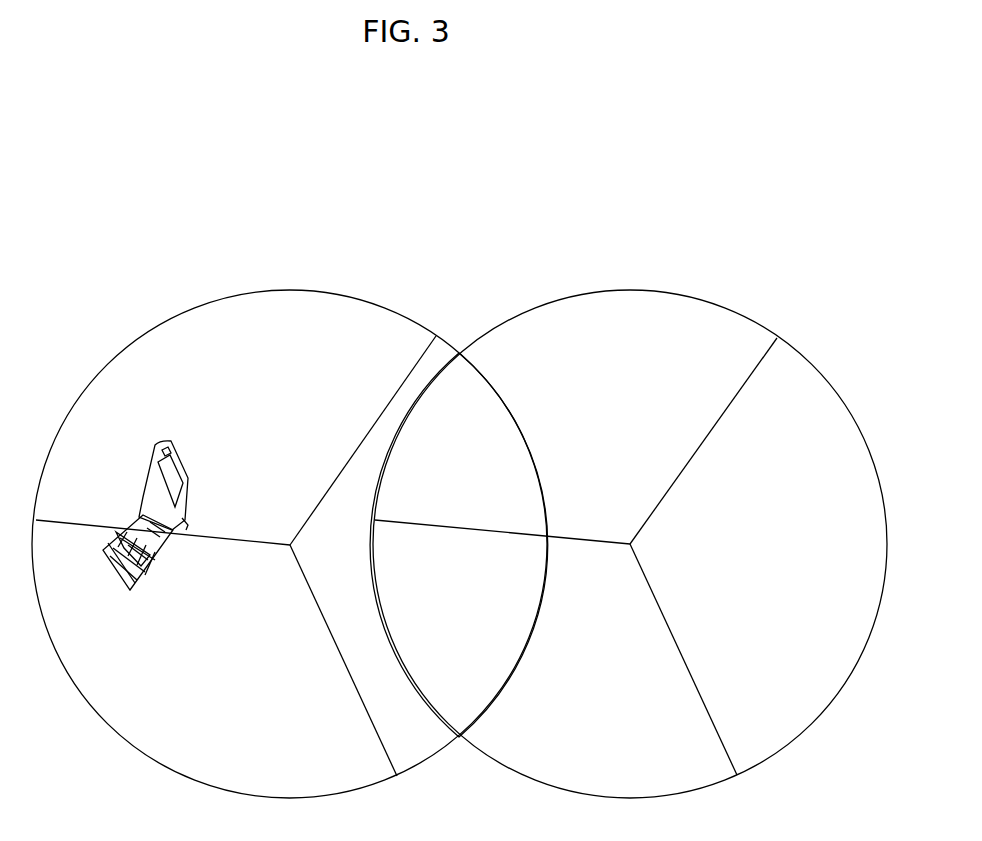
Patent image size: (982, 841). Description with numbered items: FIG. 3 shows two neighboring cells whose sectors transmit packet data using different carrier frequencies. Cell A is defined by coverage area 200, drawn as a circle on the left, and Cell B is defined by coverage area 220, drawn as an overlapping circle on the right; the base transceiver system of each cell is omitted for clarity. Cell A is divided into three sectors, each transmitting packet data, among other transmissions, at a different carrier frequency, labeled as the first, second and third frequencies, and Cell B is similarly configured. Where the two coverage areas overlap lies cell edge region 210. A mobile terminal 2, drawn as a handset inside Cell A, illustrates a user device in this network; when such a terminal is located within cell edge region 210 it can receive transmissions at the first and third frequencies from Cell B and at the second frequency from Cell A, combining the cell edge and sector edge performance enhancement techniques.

The coverage area 200 is at (263, 290).
The cell edge region 210 is at (461, 362).
The coverage area 220 is at (680, 292).
The mobile terminal 2 is at (125, 592).